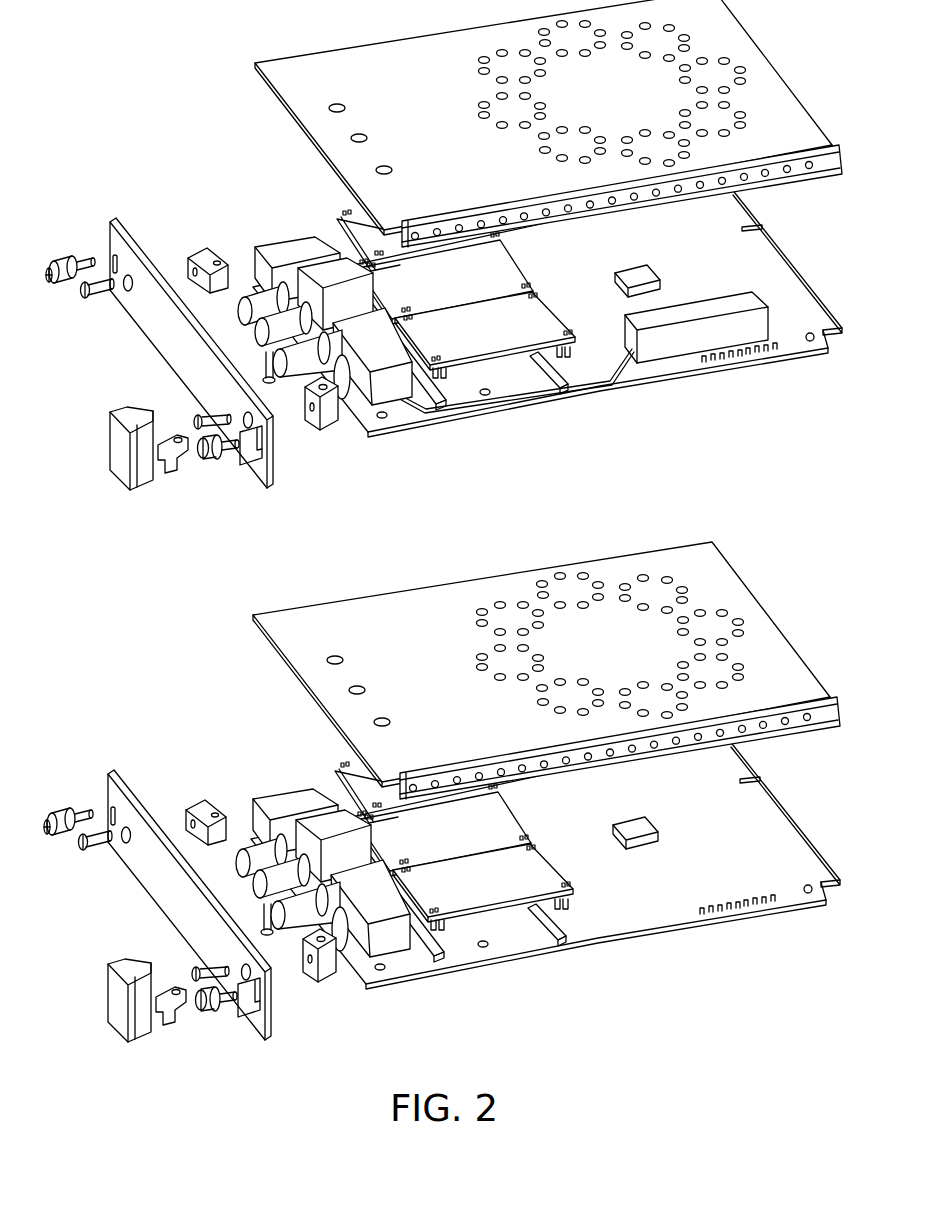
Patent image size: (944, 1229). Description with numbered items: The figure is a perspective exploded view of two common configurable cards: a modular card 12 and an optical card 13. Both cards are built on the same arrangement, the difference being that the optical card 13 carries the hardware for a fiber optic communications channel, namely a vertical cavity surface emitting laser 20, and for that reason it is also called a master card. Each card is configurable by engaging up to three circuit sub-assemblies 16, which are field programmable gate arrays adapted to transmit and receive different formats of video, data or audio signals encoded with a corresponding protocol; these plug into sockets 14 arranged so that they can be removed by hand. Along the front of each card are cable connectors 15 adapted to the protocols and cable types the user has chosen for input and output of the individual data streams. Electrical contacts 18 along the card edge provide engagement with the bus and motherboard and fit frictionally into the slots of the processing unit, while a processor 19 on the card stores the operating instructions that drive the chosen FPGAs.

The modular card 12 is at (325, 1041).
The optical card 13 is at (327, 487).
The sockets 14 is at (437, 392).
The cable connectors 15 is at (280, 250).
The circuit sub-assemblies 16 is at (338, 220).
The electrical contacts 18 is at (752, 358).
The processor 19 is at (641, 272).
The vertical cavity surface emitting laser 20 is at (740, 304).